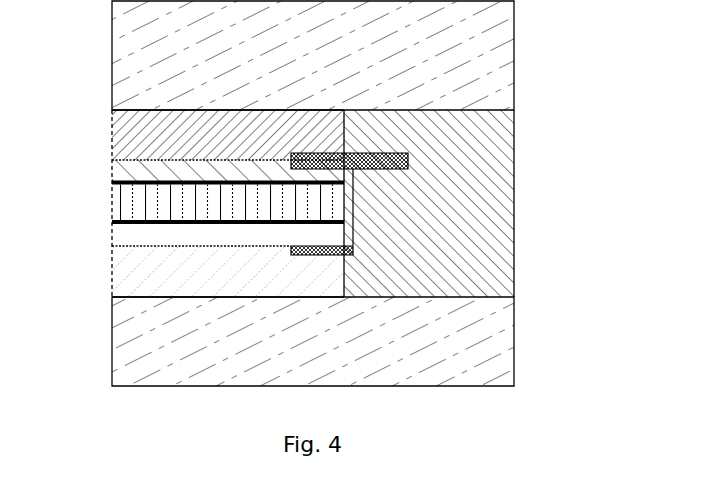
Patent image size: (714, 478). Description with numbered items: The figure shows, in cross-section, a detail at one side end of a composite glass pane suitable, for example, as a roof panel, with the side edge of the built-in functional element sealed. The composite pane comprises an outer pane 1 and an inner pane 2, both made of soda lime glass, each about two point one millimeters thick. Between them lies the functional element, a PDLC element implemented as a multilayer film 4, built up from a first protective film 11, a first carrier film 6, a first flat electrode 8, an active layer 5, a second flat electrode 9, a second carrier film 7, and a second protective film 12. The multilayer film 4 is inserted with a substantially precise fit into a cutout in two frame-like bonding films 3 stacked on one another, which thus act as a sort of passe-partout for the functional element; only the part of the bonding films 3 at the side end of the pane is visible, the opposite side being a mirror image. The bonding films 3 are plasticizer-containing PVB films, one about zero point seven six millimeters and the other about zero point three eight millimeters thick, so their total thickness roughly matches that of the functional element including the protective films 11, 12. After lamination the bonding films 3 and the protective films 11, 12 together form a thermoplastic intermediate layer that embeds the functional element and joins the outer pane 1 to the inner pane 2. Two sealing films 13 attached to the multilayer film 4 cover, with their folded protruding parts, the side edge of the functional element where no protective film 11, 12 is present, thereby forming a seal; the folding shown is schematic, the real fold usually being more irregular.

The outer pane 1 is at (514, 52).
The inner pane 2 is at (514, 344).
The frame-like bonding films 3 is at (514, 128).
The multilayer film 4 is at (112, 110).
The active layer 5 is at (112, 205).
The first carrier film 6 is at (110, 172).
The second carrier film 7 is at (112, 234).
The first flat electrode 8 is at (112, 182).
The second flat electrode 9 is at (112, 222).
The first protective film 11 is at (112, 135).
The second protective film 12 is at (112, 272).
The sealing films 13 is at (408, 155).